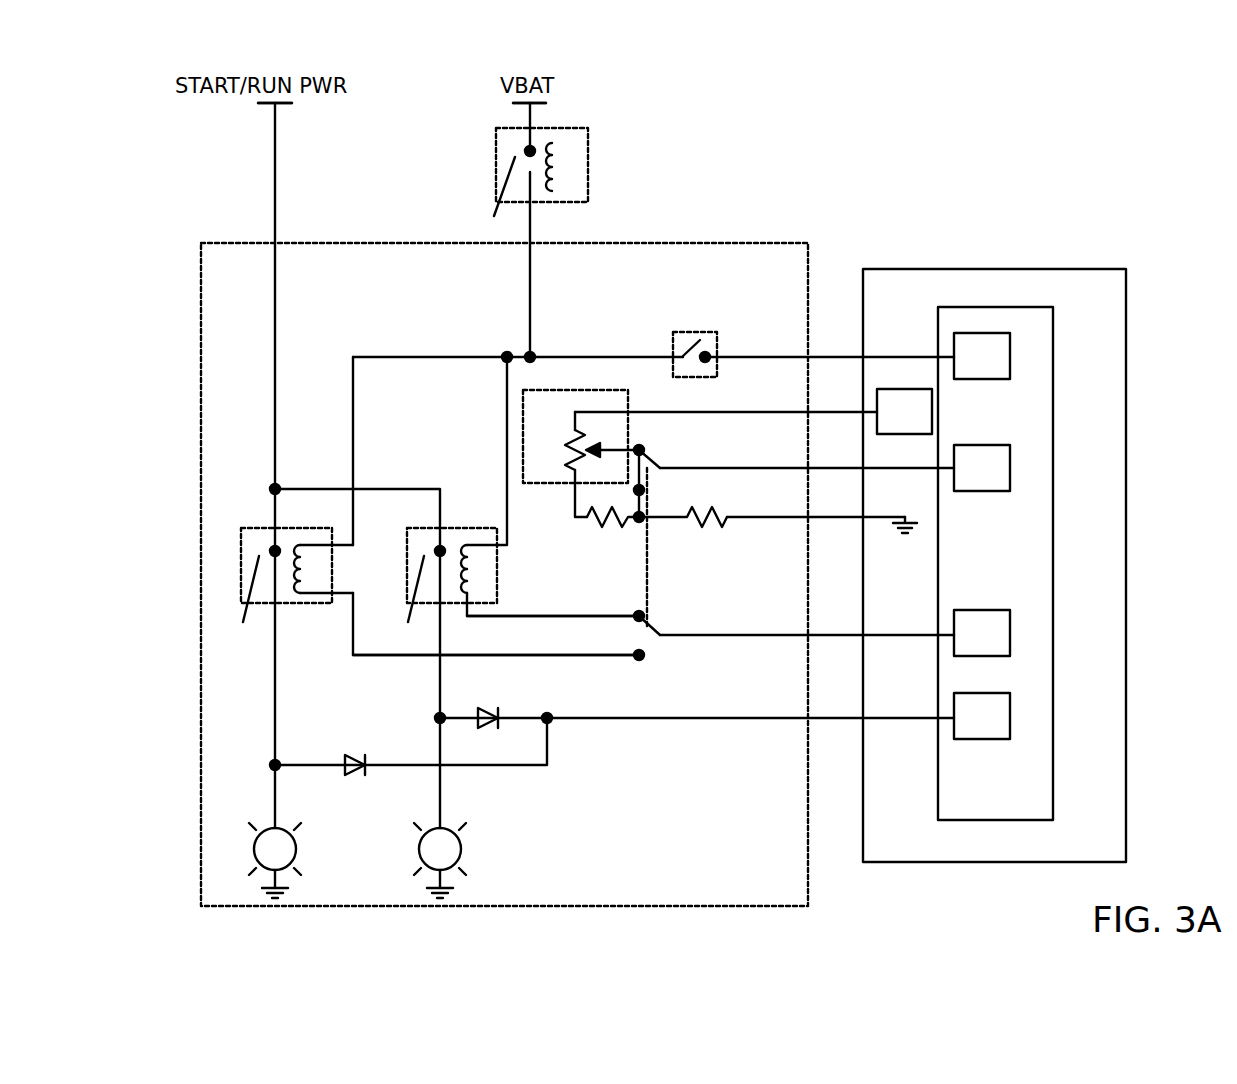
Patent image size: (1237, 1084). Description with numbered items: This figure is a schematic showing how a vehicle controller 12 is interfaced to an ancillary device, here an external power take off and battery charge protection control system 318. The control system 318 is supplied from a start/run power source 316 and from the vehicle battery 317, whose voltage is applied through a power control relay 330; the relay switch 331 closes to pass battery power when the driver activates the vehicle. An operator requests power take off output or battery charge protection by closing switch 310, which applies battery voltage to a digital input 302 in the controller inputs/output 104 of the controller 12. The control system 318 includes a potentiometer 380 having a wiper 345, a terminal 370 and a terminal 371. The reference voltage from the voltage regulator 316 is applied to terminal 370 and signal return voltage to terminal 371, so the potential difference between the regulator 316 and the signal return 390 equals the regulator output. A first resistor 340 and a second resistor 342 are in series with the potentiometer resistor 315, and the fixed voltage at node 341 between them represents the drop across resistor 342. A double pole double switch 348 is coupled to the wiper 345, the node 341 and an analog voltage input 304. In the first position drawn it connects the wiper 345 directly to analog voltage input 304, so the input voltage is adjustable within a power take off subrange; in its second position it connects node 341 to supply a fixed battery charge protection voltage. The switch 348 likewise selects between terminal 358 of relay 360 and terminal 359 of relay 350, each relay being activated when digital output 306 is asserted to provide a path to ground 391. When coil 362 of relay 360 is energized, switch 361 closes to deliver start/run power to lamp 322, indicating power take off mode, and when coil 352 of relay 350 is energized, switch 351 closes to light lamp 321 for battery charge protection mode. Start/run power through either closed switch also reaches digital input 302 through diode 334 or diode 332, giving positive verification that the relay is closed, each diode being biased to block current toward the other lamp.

The controller 12 is at (1108, 269).
The controller inputs/output 104 is at (1055, 377).
The digital input 302 is at (345, 770).
The analog voltage input 304 is at (366, 771).
The digital output 306 is at (982, 633).
The switch 310 is at (717, 377).
The potentiometer resistor 315 is at (568, 442).
The start/run power source 316 is at (290, 104).
The vehicle battery 317 is at (538, 105).
The power take off and battery charge protection control system 318 is at (795, 243).
The lamp 321 is at (297, 848).
The lamp 322 is at (462, 848).
The power control relay 330 is at (588, 202).
The switch 331 is at (492, 197).
The diode 332 is at (360, 757).
The diode 334 is at (488, 710).
The first resistor 340 is at (598, 521).
The node 341 is at (636, 521).
The second resistor 342 is at (702, 525).
The wiper 345 is at (612, 450).
The double pole double switch 348 is at (660, 463).
The relay 350 is at (280, 603).
The switch 351 is at (238, 600).
The coil 352 is at (308, 578).
The terminal 358 is at (636, 612).
The terminal 359 is at (636, 651).
The relay 360 is at (500, 596).
The switch 361 is at (402, 600).
The coil 362 is at (478, 560).
The terminal 370 is at (576, 410).
The terminal 371 is at (573, 491).
The potentiometer 380 is at (547, 390).
The signal return 390 is at (908, 535).
The ground 391 is at (283, 884).